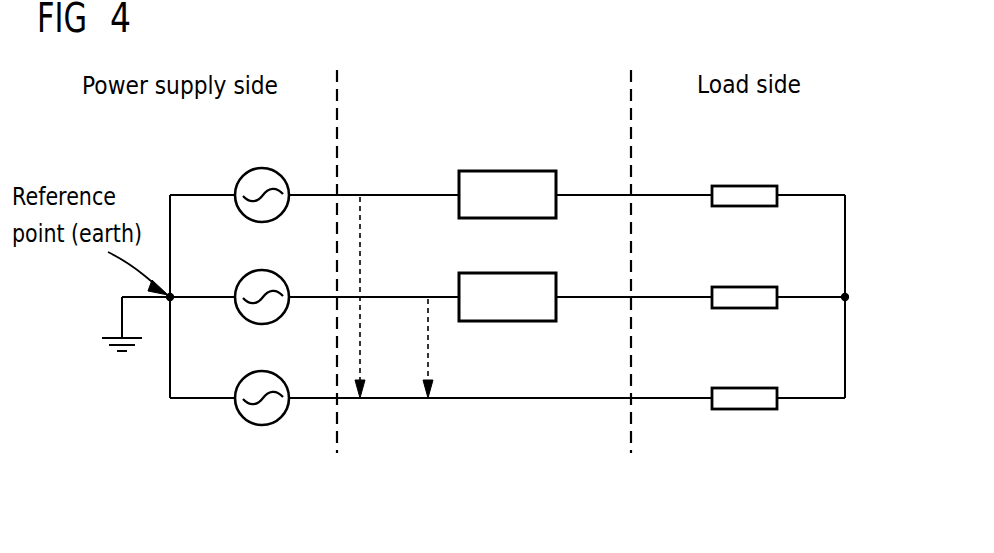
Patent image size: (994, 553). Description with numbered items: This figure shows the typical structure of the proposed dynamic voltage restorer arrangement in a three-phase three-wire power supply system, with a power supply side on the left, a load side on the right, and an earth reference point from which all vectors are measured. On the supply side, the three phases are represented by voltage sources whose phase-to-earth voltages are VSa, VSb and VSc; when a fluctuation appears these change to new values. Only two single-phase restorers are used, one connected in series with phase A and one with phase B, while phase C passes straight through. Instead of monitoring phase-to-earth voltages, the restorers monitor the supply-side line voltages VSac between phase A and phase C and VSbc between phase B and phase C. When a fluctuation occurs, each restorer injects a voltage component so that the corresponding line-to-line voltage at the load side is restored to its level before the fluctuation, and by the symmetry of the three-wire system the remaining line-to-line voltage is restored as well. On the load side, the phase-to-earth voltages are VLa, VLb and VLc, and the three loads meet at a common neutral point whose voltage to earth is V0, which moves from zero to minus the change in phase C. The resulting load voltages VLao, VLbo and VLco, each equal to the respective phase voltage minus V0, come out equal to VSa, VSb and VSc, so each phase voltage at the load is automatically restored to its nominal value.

The phase A supply-side voltage to earth VSa is at (226, 137).
The phase B supply-side voltage to earth VSb is at (226, 239).
The phase C supply-side voltage to earth VSc is at (226, 342).
The phase A load voltage relative to load neutral VLao is at (768, 175).
The phase B load voltage relative to load neutral VLbo is at (768, 276).
The phase C load voltage relative to load neutral VLco is at (768, 377).
The supply-side line voltage between phase A and phase C VSac is at (377, 367).
The supply-side line voltage between phase B and phase C VSbc is at (445, 367).
The phase A load-side voltage to earth VLa is at (672, 161).
The phase B load-side voltage to earth VLb is at (672, 262).
The phase C load-side voltage to earth VLc is at (672, 363).
The load neutral point voltage V0 is at (864, 282).